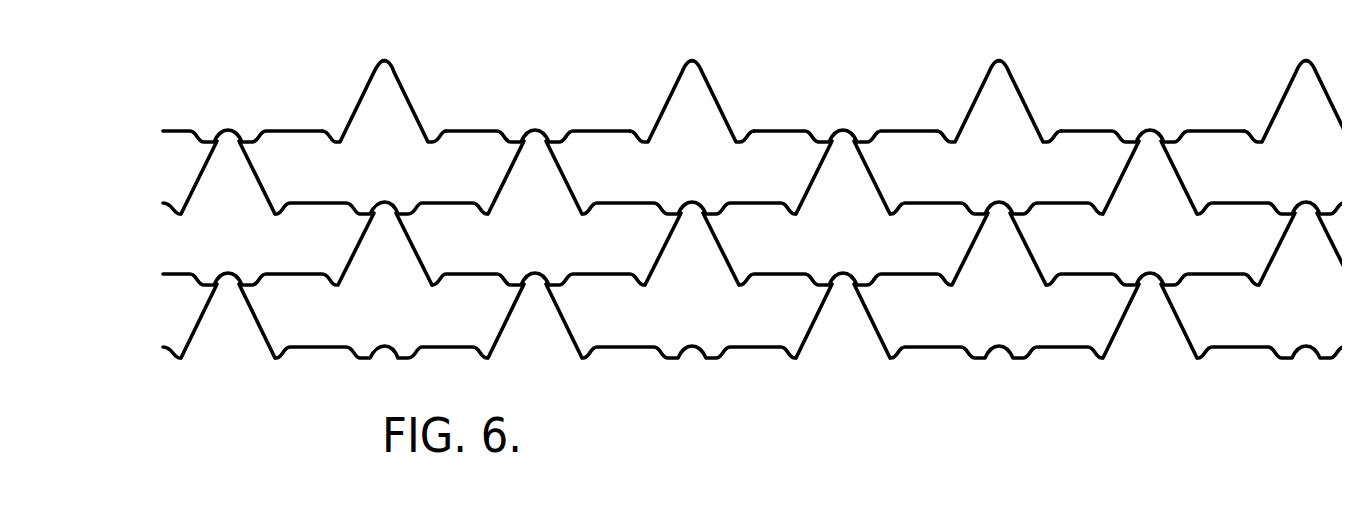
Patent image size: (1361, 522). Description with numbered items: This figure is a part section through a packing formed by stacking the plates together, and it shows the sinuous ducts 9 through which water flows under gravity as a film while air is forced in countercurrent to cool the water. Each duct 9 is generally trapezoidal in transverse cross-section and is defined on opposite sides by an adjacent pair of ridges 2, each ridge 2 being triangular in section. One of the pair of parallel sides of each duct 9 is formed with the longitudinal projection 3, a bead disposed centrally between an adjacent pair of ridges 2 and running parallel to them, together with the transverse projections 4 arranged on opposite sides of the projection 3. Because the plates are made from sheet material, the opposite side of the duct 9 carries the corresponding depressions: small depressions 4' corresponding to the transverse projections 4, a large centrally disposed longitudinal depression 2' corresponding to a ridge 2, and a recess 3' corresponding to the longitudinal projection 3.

The ridge 2 is at (814, 93).
The depression corresponding to ridge 2' is at (872, 91).
The longitudinal projection 3 is at (758, 215).
The depression corresponding to longitudinal projection 3' is at (996, 385).
The transverse projection 4 is at (703, 108).
The depression corresponding to transverse projection 4' is at (845, 162).
The sinuous duct 9 is at (872, 233).